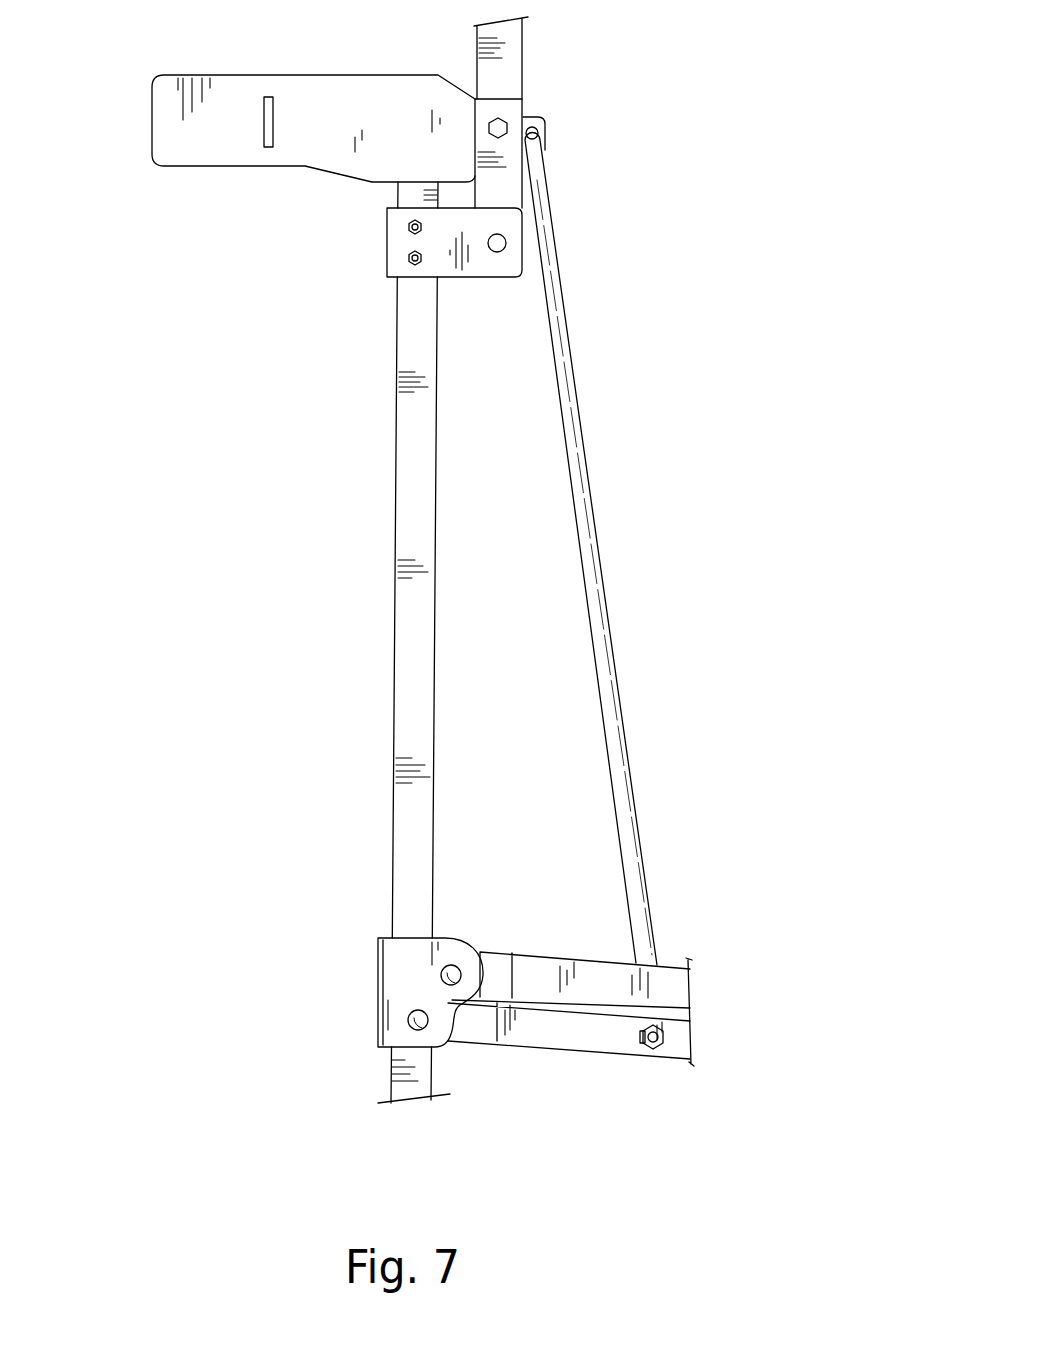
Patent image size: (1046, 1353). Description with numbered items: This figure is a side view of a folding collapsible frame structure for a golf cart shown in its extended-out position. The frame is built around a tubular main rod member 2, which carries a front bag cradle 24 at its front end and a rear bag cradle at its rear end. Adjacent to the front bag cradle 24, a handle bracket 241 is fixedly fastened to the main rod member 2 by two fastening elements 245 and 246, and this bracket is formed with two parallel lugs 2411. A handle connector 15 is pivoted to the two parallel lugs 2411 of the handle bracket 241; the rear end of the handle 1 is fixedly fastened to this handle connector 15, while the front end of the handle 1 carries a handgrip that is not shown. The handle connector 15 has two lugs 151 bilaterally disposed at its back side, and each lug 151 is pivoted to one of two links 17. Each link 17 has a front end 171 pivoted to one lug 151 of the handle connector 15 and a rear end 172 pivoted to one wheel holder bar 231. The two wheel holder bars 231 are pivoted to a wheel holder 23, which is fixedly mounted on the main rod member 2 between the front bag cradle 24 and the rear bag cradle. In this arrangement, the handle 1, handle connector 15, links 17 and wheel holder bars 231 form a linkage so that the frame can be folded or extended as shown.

The handle 1 is at (527, 58).
The tubular main rod member 2 is at (393, 476).
The handle connector 15 is at (523, 205).
The lug 151 is at (541, 117).
The link 17 is at (620, 659).
The front end of link 171 is at (534, 139).
The rear end of link 172 is at (642, 1047).
The wheel holder 23 is at (378, 975).
The wheel holder bar 231 is at (620, 1017).
The front bag cradle 24 is at (152, 120).
The handle bracket 241 is at (522, 260).
The parallel lug 2411 is at (510, 223).
The fastening element 245 is at (405, 230).
The fastening element 246 is at (407, 261).